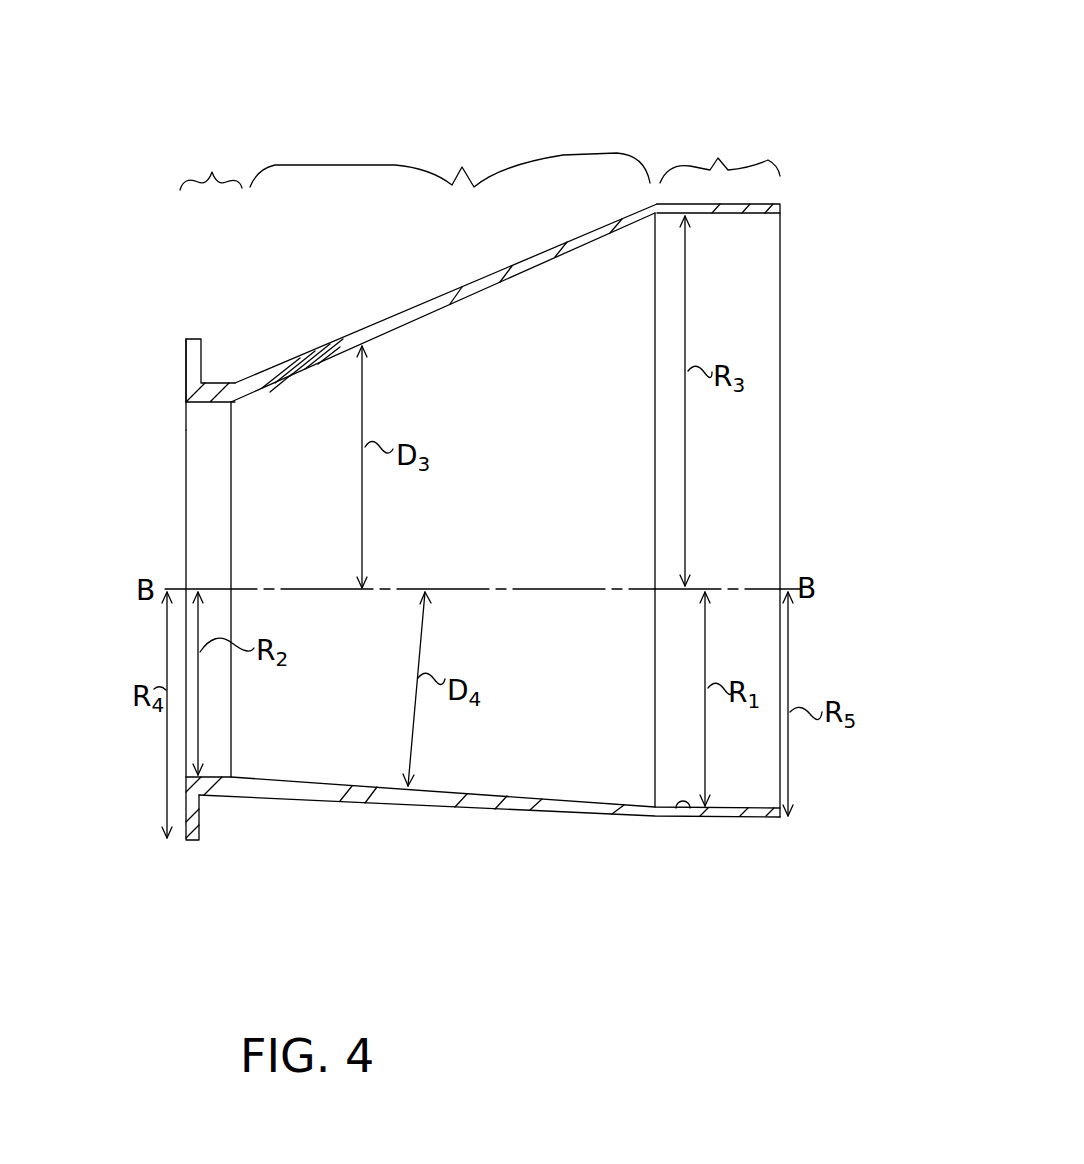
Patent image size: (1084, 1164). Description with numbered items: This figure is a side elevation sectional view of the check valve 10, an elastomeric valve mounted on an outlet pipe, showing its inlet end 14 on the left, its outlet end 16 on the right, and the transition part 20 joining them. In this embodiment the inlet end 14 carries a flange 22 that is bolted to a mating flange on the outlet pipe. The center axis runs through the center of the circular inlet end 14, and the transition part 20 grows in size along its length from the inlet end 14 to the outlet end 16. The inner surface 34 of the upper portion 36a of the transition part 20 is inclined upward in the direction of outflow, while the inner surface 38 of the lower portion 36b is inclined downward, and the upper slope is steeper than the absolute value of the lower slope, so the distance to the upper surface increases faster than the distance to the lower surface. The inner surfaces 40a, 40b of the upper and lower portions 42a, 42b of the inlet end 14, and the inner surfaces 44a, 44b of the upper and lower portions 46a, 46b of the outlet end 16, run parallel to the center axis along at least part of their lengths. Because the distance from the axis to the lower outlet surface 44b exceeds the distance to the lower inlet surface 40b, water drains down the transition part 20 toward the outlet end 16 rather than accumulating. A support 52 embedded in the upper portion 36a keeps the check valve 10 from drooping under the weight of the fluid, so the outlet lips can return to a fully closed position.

The check valve 10 is at (445, 82).
The inlet end 14 is at (211, 163).
The outlet end 16 is at (720, 148).
The transition part 20 is at (450, 154).
The flange 22 is at (186, 352).
The inner surface of the upper portion of the transition part 34 is at (408, 328).
The upper portion of the transition part 36a is at (455, 298).
The lower portion of the transition part 36b is at (473, 803).
The inner surface of the lower portion of the transition part 38 is at (330, 787).
The inner surface of the upper portion of the inlet end 40a is at (186, 415).
The inner surface of the lower portion of the inlet end 40b is at (217, 778).
The upper portion of the inlet end 42a is at (216, 390).
The lower portion of the inlet end 42b is at (225, 787).
The inner surface of the upper portion of the outlet end 44a is at (725, 213).
The inner surface of the lower portion of the outlet end 44b is at (690, 810).
The upper portion of the outlet end 46a is at (780, 205).
The lower portion of the outlet end 46b is at (745, 815).
The support 52 is at (289, 360).